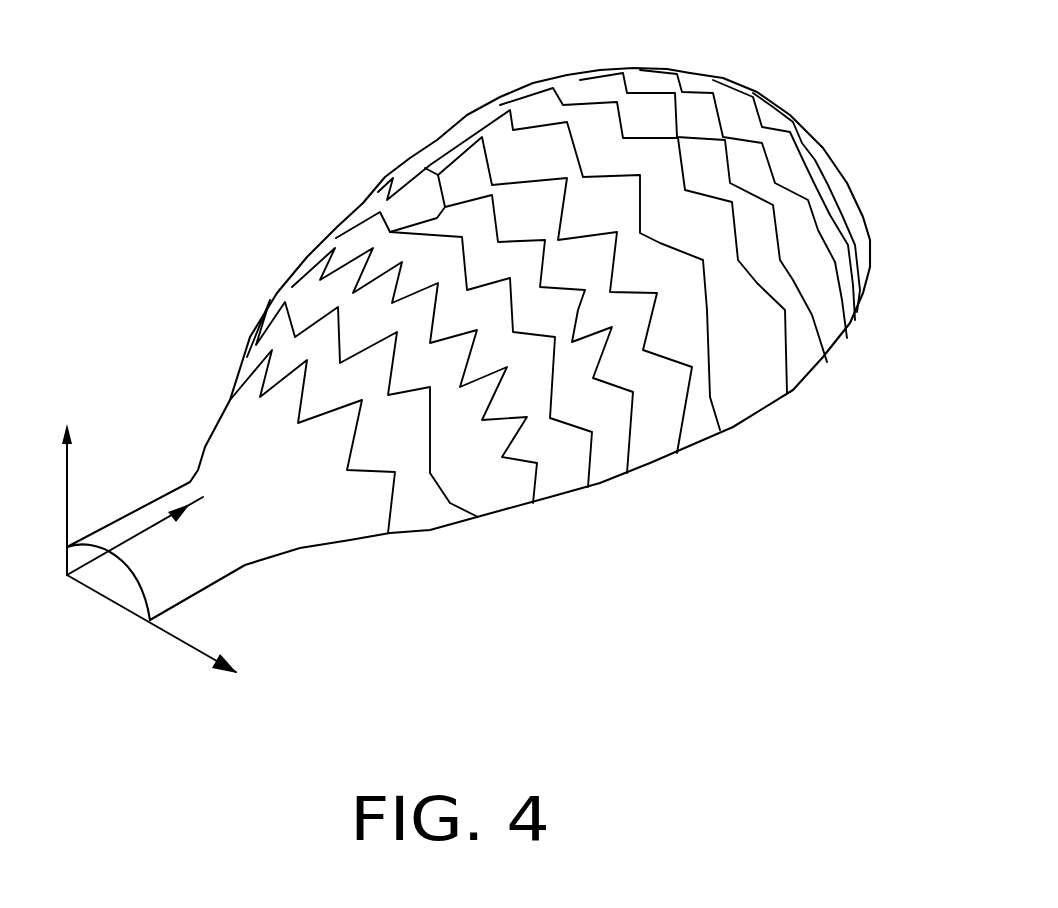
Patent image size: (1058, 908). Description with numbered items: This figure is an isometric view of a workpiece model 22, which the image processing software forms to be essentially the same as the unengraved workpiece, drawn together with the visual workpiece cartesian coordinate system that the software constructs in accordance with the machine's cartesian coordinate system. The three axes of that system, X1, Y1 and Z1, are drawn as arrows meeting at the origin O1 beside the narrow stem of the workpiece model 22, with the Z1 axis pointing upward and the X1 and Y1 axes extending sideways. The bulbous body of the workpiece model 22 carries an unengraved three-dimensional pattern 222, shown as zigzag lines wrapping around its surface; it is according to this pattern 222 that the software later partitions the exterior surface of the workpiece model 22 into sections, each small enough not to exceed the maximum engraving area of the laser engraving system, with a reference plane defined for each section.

The workpiece model 22 is at (302, 226).
The unengraved three-dimensional pattern 222 is at (280, 383).
The Z1 axis of visual workpiece cartesian coordinate system Z1 is at (47, 499).
The Y1 axis of visual workpiece cartesian coordinate system Y1 is at (135, 510).
The X1 axis of visual workpiece cartesian coordinate system X1 is at (152, 641).
The origin of visual workpiece cartesian coordinate system O1 is at (50, 577).